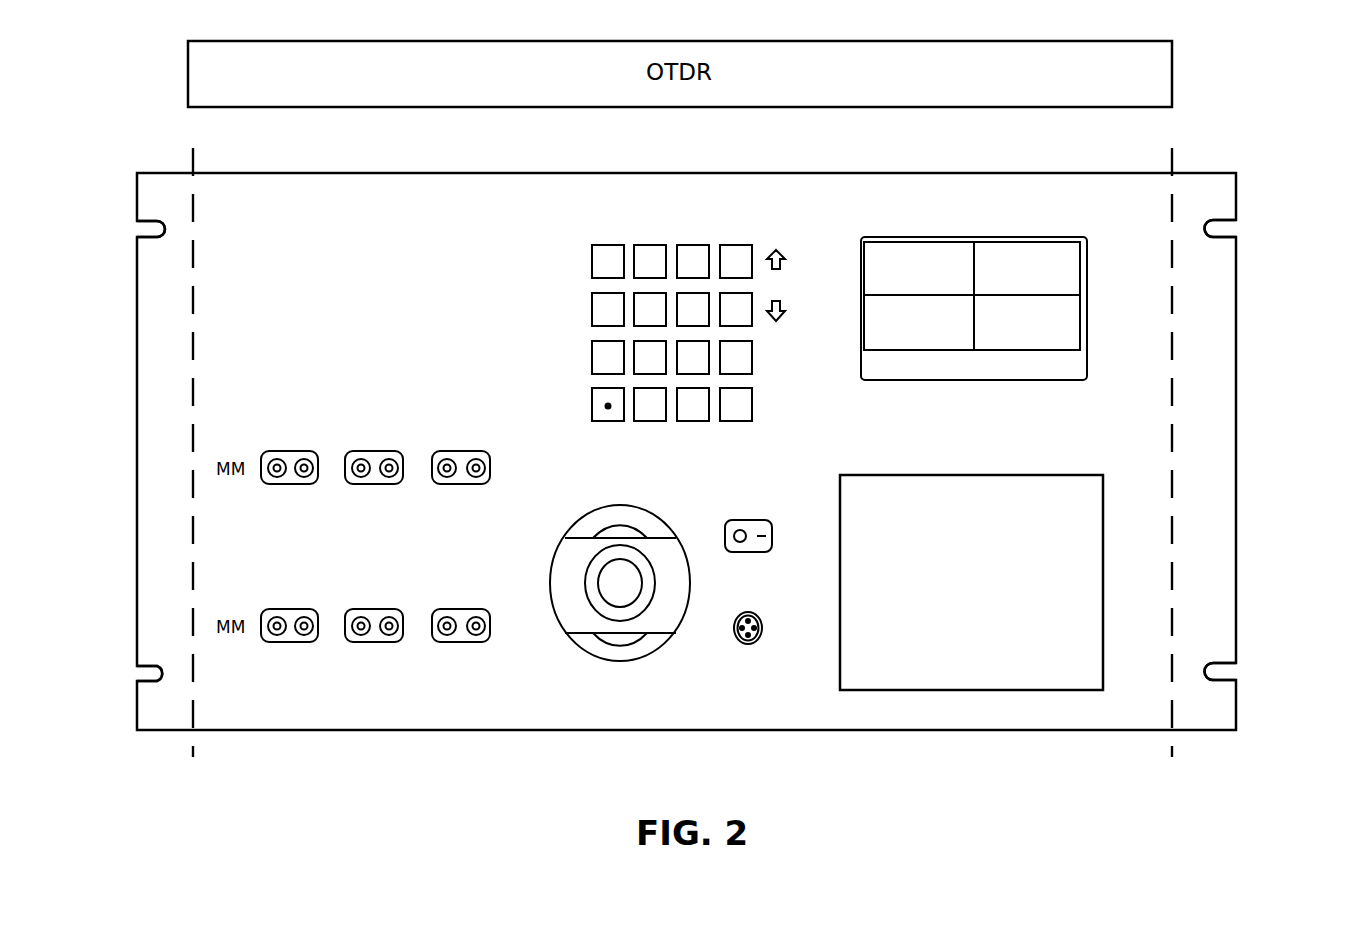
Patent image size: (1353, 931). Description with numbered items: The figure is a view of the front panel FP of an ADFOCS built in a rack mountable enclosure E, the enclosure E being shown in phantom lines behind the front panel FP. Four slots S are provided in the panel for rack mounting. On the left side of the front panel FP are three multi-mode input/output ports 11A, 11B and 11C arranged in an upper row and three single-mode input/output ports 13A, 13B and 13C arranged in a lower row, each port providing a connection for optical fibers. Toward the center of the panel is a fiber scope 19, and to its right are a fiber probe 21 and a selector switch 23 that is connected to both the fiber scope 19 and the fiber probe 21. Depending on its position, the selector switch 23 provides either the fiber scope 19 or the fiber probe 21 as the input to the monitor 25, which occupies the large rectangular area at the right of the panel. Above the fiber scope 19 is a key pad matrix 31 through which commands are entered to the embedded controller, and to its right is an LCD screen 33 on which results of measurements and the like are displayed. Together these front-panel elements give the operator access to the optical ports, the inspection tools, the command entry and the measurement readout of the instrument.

The multi-mode input/output port 11A is at (271, 450).
The multi-mode input/output port 11B is at (349, 450).
The multi-mode input/output port 11C is at (436, 450).
The single-mode input/output port 13A is at (267, 608).
The single-mode input/output port 13B is at (351, 608).
The single-mode input/output port 13C is at (438, 608).
The fiber scope 19 is at (627, 662).
The fiber probe 21 is at (762, 646).
The selector switch 23 is at (770, 551).
The monitor 25 is at (910, 683).
The key pad matrix 31 is at (675, 213).
The LCD screen 33 is at (950, 234).
The slot S is at (150, 228).
The enclosure E is at (193, 302).
The front panel FP is at (363, 705).